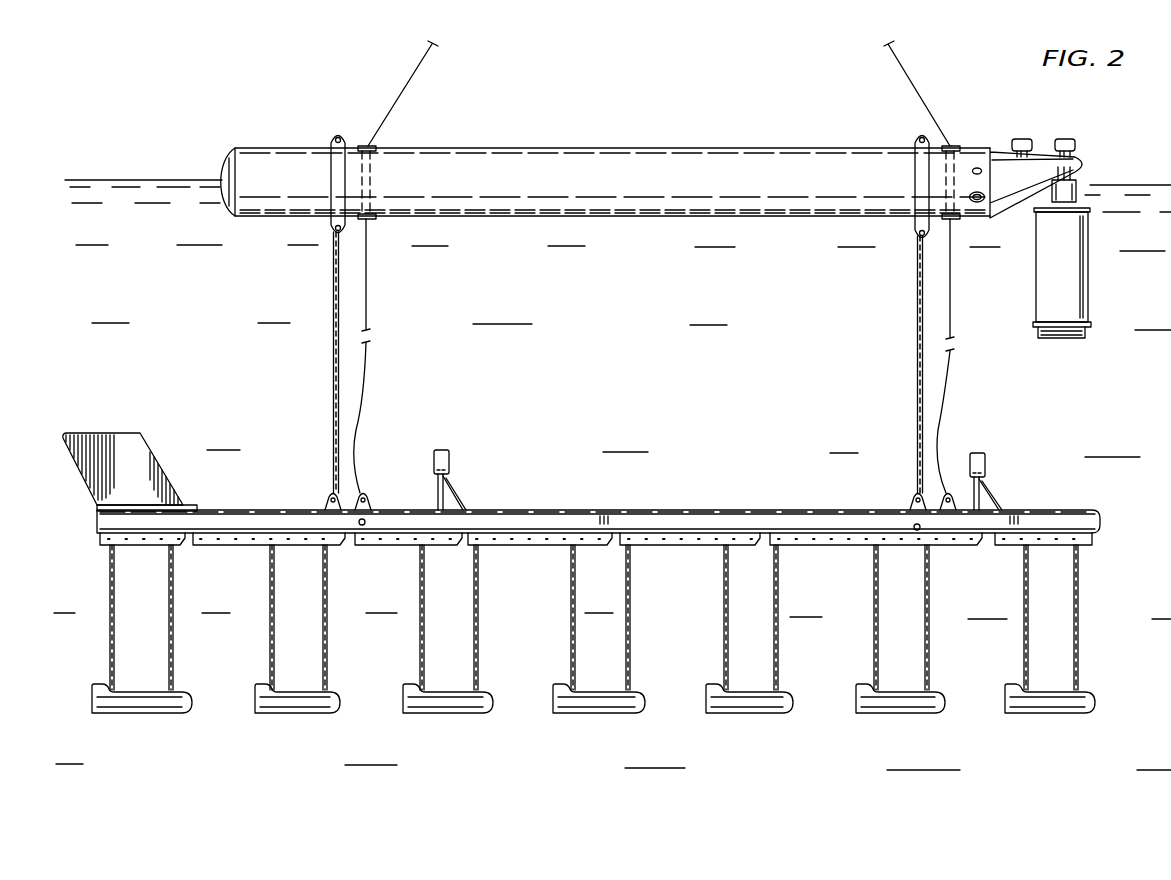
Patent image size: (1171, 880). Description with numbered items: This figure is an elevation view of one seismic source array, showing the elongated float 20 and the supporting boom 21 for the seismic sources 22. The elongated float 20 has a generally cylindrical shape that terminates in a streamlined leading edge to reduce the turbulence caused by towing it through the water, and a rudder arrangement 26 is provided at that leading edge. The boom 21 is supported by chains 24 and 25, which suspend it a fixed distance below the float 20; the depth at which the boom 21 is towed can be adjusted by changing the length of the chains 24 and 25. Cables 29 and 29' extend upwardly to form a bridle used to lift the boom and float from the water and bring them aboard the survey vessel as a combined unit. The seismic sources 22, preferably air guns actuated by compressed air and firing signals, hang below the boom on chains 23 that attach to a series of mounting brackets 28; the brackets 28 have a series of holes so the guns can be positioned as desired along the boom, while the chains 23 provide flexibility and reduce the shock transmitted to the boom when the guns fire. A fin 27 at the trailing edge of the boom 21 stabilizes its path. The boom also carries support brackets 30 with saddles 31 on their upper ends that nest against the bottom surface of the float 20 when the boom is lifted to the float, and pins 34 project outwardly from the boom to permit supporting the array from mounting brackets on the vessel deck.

The elongated float 20 is at (650, 152).
The boom 21 is at (700, 508).
The seismic sources 22 is at (283, 714).
The chains 23 is at (930, 597).
The chain 24 is at (917, 300).
The chain 25 is at (332, 288).
The rudder arrangement 26 is at (1100, 291).
The fin 27 is at (140, 457).
The mounting brackets 28 is at (893, 546).
The cable 29 is at (970, 356).
The cable 29' is at (396, 356).
The support brackets 30 is at (457, 490).
The saddles 31 is at (448, 455).
The pins 34 is at (366, 522).